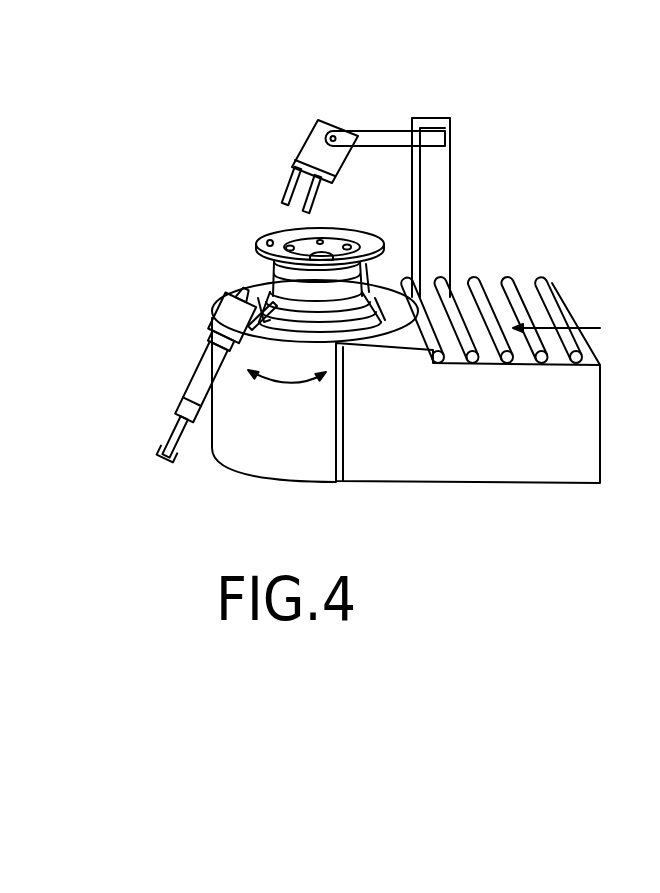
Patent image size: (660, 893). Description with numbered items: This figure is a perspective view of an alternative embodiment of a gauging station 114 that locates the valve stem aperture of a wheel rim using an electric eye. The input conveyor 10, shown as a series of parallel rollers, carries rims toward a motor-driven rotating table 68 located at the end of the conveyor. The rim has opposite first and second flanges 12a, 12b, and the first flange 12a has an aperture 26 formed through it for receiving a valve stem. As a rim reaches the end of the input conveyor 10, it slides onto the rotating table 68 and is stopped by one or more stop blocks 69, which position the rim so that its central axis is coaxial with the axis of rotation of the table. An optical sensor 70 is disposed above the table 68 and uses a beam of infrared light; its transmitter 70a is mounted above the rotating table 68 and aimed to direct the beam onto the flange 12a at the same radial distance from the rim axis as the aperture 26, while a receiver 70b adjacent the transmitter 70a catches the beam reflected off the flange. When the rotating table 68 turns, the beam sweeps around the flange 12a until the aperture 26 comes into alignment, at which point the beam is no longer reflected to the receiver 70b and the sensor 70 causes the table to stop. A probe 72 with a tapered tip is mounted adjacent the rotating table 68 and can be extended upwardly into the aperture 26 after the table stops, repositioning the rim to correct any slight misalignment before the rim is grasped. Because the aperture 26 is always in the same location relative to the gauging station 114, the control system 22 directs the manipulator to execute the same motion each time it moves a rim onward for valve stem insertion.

The input conveyor 10 is at (647, 283).
The first flange 12a is at (380, 233).
The second flange 12b is at (365, 325).
The control system 22 is at (341, 327).
The aperture 26 is at (270, 240).
The rotating table 68 is at (406, 315).
The stop blocks 69 is at (270, 293).
The optical sensor 70 is at (334, 151).
The transmitter 70a is at (287, 193).
The receiver 70b is at (318, 210).
The probe 72 is at (240, 287).
The gauging station 114 is at (336, 234).